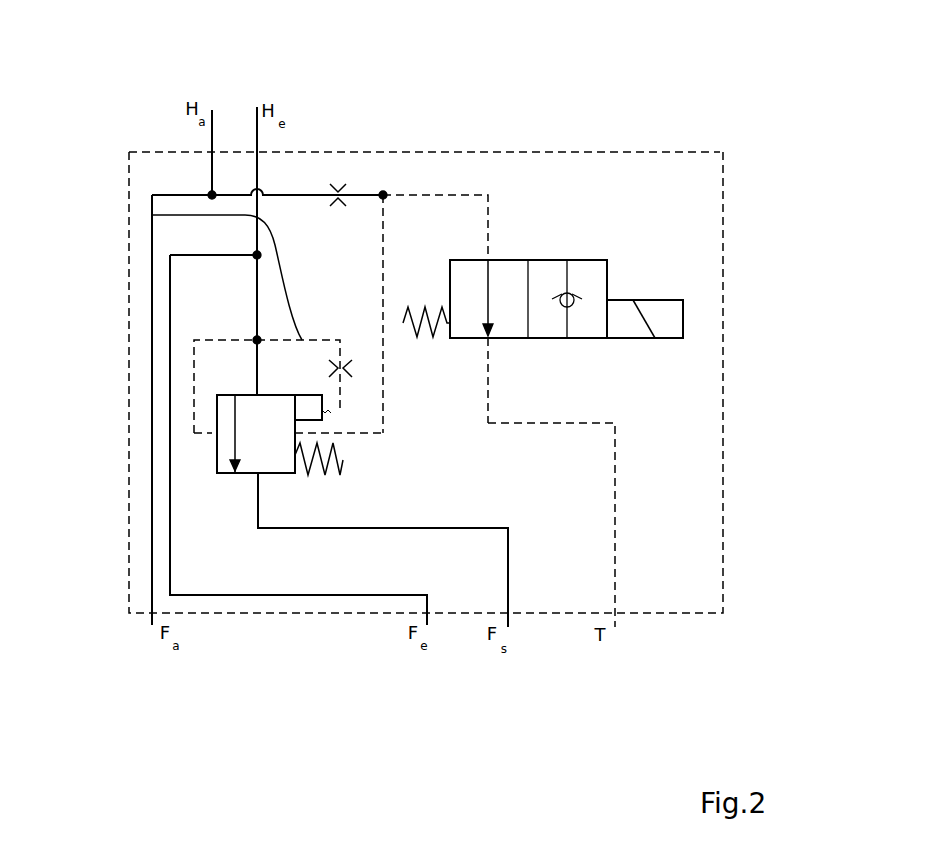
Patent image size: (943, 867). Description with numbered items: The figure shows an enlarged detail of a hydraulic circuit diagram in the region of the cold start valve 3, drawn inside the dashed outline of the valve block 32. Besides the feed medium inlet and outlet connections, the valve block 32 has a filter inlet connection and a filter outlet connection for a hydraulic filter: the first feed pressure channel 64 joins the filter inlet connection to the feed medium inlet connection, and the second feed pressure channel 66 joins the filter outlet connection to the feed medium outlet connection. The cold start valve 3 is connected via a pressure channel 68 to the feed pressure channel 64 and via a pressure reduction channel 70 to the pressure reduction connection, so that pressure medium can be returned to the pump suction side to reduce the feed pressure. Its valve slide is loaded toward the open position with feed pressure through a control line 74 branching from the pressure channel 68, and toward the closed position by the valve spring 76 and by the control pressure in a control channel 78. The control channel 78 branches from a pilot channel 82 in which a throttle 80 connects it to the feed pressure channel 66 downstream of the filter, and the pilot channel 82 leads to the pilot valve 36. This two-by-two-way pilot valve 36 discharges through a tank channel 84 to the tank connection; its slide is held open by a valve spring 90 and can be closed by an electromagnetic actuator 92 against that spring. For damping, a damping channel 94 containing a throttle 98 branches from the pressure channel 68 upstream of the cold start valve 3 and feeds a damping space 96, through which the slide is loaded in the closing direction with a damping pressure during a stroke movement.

The cold start valve 3 is at (217, 456).
The valve block 32 is at (716, 153).
The pilot valve 36 is at (587, 260).
The first feed pressure channel 64 is at (330, 597).
The second feed pressure channel 66 is at (150, 434).
The pressure channel 68 is at (257, 315).
The pressure reduction channel 70 is at (427, 528).
The control line 74 is at (194, 382).
The valve spring 76 is at (320, 463).
The control channel 78 is at (384, 229).
The throttle 80 is at (338, 190).
The pilot channel 82 is at (489, 205).
The tank channel 84 is at (615, 453).
The valve spring 90 is at (433, 337).
The electromagnetic actuator 92 is at (670, 315).
The damping channel 94 is at (150, 214).
The damping space 96 is at (331, 413).
The throttle 98 is at (347, 360).